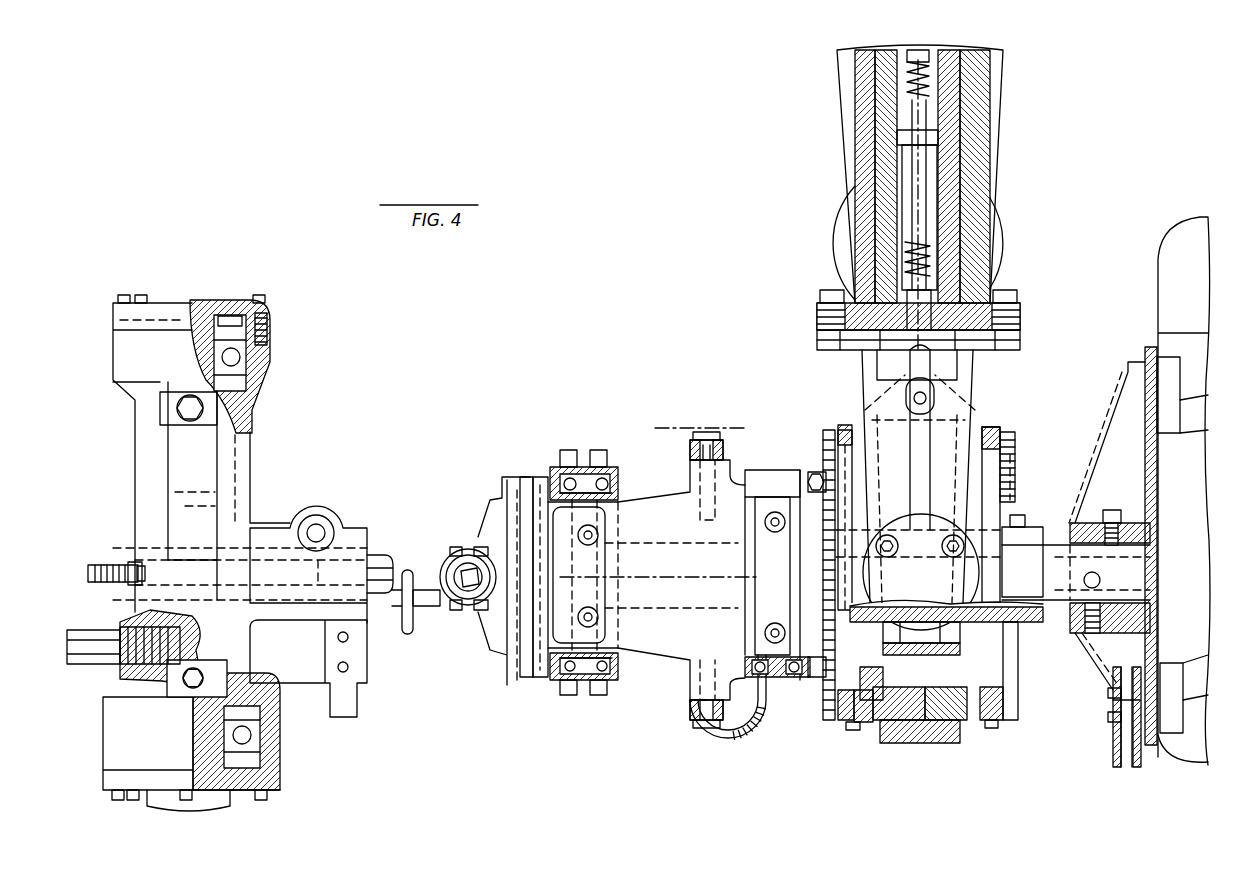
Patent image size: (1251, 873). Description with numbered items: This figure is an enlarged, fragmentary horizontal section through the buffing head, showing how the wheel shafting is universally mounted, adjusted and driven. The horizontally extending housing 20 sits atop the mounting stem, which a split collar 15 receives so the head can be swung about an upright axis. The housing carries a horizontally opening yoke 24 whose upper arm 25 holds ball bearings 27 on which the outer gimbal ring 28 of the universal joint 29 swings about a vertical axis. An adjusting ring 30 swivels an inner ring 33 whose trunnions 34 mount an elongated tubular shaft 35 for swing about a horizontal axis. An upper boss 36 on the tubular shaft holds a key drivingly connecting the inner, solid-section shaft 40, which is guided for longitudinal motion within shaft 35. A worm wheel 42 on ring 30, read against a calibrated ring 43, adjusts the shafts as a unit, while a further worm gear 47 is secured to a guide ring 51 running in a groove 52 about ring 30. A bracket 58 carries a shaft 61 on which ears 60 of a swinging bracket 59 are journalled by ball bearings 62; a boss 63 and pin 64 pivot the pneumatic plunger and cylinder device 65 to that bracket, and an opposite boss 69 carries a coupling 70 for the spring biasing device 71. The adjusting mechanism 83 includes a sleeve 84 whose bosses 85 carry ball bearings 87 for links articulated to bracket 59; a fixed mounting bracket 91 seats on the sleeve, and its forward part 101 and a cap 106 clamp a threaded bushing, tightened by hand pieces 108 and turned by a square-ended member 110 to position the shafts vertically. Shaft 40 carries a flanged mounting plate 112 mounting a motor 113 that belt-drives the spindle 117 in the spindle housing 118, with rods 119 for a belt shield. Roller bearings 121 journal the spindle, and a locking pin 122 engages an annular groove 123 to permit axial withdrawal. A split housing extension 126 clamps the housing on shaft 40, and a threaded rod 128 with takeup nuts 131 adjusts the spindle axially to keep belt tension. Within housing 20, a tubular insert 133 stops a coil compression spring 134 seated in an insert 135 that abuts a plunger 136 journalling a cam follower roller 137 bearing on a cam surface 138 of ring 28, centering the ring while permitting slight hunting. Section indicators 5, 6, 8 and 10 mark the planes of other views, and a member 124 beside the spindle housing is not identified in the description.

The view direction arrow 5 is at (812, 375).
The section line 6- 6 is at (1018, 470).
The section line 8- 8 is at (667, 426).
The section line 10- 10 is at (440, 598).
The split collar 15 is at (845, 248).
The housing 20 is at (865, 160).
The yoke 24 is at (977, 420).
The upper arm 25 is at (953, 452).
The ball bearings 27 is at (930, 540).
The gimbal ring 28 is at (915, 730).
The universal joint 29 is at (1020, 690).
The adjusting ring 30 is at (945, 700).
The inner ring 33 is at (945, 652).
The trunnions 34 is at (828, 692).
The tubular shaft 35 is at (1032, 624).
The upper boss 36 is at (1037, 532).
The inner shaft 40 is at (1063, 605).
The worm wheel 42 is at (992, 722).
The calibrated ring 43 is at (1015, 446).
The worm gear 47 is at (853, 730).
The guide ring 51 is at (842, 705).
The groove 52 is at (872, 690).
The bracket 58 is at (813, 472).
The swinging bracket 59 is at (683, 640).
The ears 60 is at (790, 485).
The shaft 61 is at (757, 497).
The ball bearings 62 is at (797, 688).
The boss 63 is at (692, 680).
The pin 64 is at (705, 722).
The pneumatic plunger and cylinder device 65 is at (730, 742).
The boss 69 is at (690, 480).
The coupling 70 is at (697, 440).
The spring biasing device 71 is at (708, 432).
The adjusting mechanism 83 is at (479, 476).
The sleeve 84 is at (552, 495).
The bosses 85 is at (620, 498).
The ball bearings 87 is at (612, 490).
The mounting bracket 91 is at (507, 652).
The forward extending part 101 is at (478, 537).
The cap 106 is at (475, 606).
The threaded hand piece 108 is at (430, 612).
The square-ended member 110 is at (465, 572).
The flanged mounting plate 112 is at (1145, 357).
The motor 113 is at (1190, 753).
The spindle 117 is at (182, 690).
The spindle housing 118 is at (252, 481).
The rods 119 is at (345, 706).
The roller bearings 121 is at (236, 356).
The locking pin 122 is at (160, 652).
The annular groove 123 is at (200, 648).
The vertical plate 124 is at (168, 452).
The split housing extension 126 is at (362, 528).
The threaded rod 128 is at (103, 566).
The takeup nuts 131 is at (128, 582).
The tubular insert 133 is at (930, 104).
The coil compression spring 134 is at (940, 140).
The insert 135 is at (935, 250).
The plunger 136 is at (928, 305).
The cam follower roller 137 is at (935, 400).
The cam surface 138 is at (905, 398).